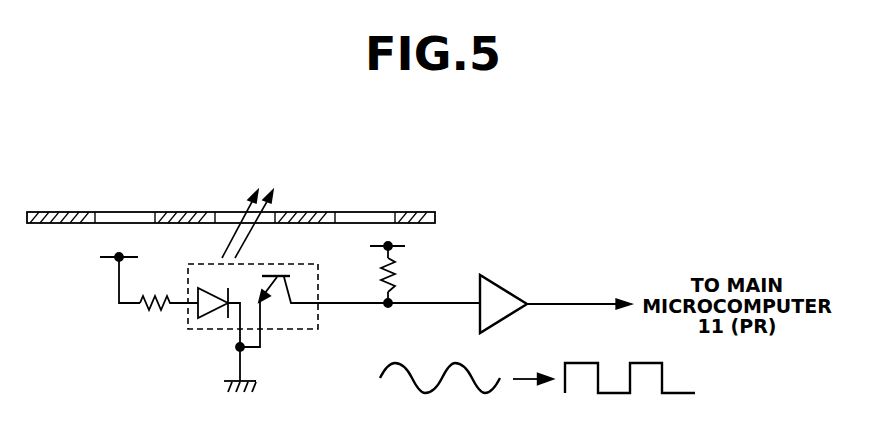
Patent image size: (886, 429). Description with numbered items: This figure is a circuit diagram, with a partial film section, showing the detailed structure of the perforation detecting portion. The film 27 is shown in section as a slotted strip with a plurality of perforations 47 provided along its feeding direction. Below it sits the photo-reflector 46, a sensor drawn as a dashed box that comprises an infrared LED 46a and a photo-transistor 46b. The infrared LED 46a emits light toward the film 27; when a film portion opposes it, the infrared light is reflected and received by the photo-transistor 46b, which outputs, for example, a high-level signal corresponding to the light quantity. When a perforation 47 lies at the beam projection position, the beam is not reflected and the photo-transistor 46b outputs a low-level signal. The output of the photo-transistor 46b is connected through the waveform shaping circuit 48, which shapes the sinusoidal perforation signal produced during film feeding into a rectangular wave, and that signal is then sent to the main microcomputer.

The film 27 is at (413, 212).
The perforation 47 is at (228, 210).
The photo-reflector 46 is at (290, 332).
The infrared LED 46a is at (207, 317).
The photo-transistor 46b is at (290, 272).
The waveform shaping circuit 48 is at (498, 286).